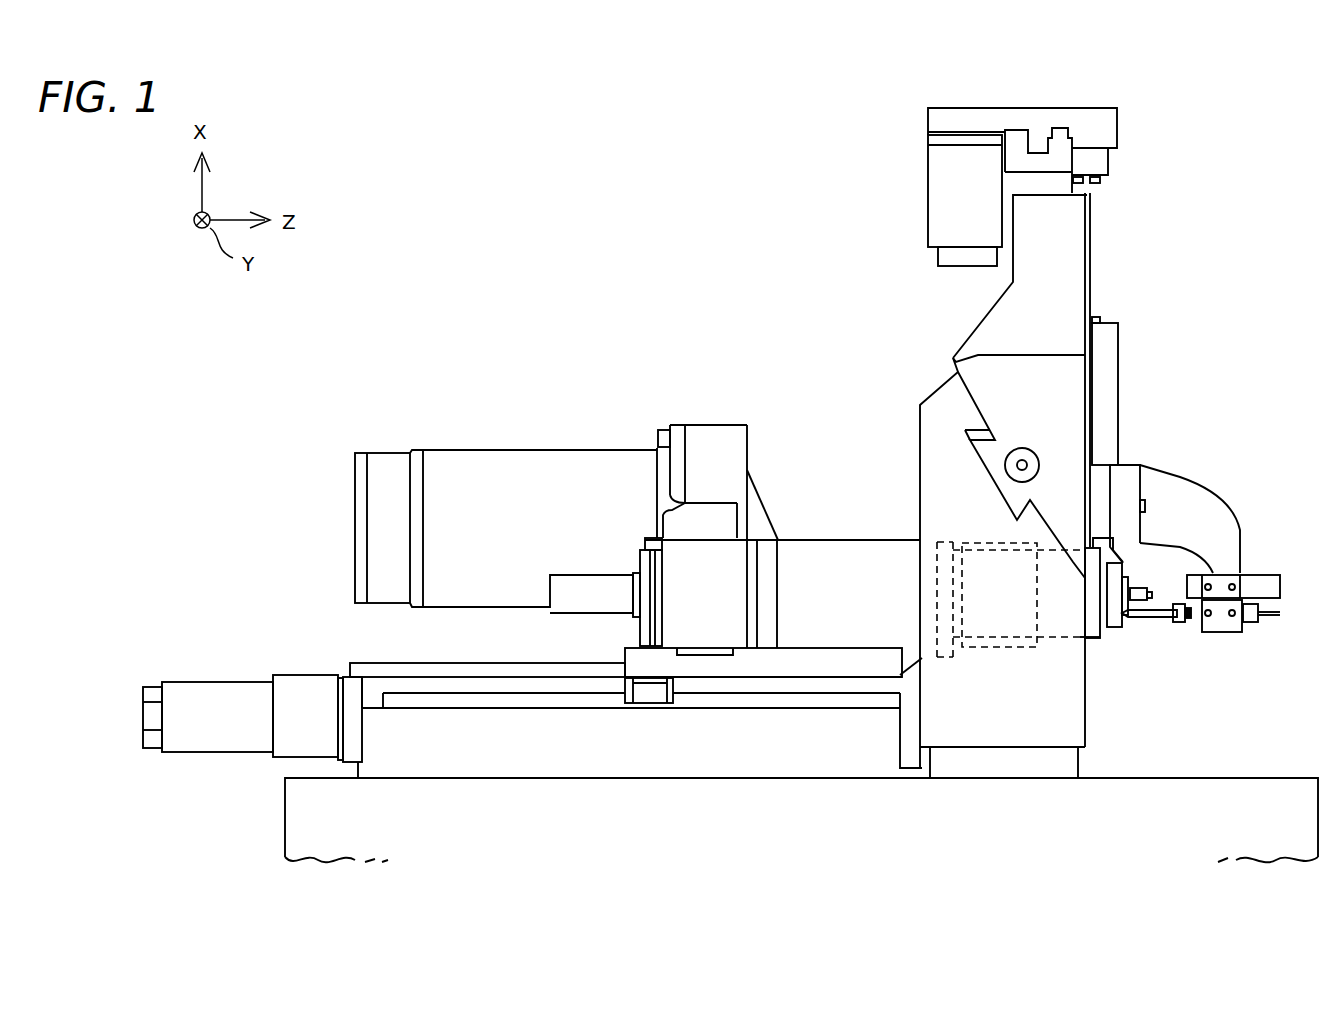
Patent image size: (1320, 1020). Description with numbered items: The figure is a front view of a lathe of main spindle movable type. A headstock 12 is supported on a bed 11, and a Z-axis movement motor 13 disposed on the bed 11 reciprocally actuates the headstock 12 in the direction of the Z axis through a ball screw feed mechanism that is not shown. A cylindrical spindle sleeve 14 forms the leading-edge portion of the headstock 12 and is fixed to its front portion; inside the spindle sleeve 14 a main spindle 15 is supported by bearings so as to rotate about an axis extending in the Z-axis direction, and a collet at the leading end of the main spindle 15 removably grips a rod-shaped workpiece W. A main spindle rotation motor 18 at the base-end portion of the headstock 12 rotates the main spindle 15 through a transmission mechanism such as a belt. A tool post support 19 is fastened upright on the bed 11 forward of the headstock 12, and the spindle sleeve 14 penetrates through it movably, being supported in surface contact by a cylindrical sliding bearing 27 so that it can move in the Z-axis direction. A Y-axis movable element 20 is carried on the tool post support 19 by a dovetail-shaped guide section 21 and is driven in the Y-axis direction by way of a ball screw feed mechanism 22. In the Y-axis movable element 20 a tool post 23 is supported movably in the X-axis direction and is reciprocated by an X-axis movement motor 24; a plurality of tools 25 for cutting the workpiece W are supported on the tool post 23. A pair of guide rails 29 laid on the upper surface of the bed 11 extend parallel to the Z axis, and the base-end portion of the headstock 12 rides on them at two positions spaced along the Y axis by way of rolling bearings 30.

The bed 11 is at (1195, 778).
The headstock 12 is at (860, 540).
The Z-axis movement motor 13 is at (232, 683).
The spindle sleeve 14 is at (1057, 645).
The main spindle 15 is at (1113, 630).
The main spindle rotation motor 18 is at (568, 448).
The tool post support 19 is at (926, 438).
The Y-axis movable element 20 is at (985, 318).
The dovetail-shaped guide section 21 is at (1000, 480).
The ball screw feed mechanism 22 is at (1022, 448).
The tool post 23 is at (1118, 380).
The X-axis movement motor 24 is at (928, 197).
The tools 25 is at (1140, 590).
The sliding bearing 27 is at (983, 650).
The guide rails 29 is at (512, 708).
The rolling bearings 30 is at (650, 703).
The workpiece W is at (1138, 612).